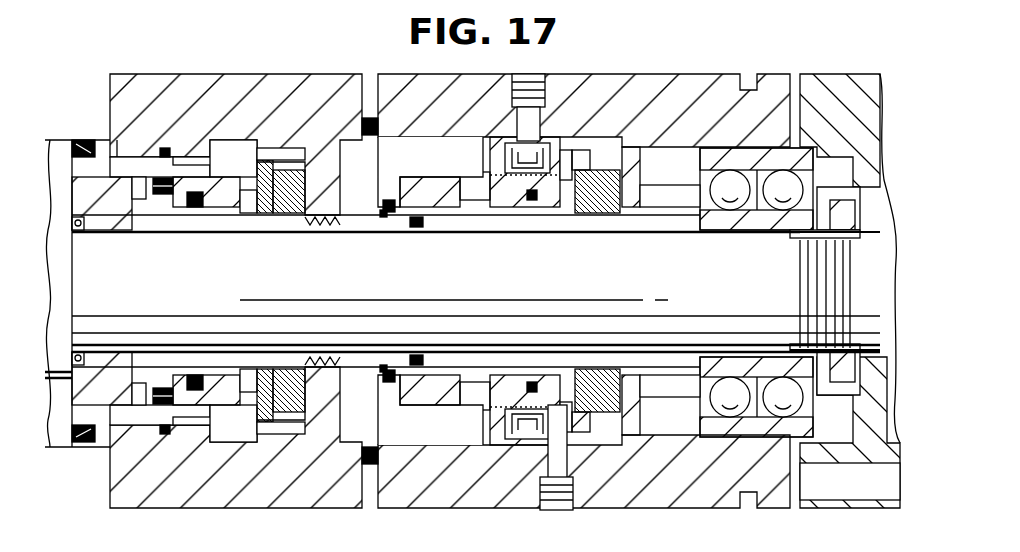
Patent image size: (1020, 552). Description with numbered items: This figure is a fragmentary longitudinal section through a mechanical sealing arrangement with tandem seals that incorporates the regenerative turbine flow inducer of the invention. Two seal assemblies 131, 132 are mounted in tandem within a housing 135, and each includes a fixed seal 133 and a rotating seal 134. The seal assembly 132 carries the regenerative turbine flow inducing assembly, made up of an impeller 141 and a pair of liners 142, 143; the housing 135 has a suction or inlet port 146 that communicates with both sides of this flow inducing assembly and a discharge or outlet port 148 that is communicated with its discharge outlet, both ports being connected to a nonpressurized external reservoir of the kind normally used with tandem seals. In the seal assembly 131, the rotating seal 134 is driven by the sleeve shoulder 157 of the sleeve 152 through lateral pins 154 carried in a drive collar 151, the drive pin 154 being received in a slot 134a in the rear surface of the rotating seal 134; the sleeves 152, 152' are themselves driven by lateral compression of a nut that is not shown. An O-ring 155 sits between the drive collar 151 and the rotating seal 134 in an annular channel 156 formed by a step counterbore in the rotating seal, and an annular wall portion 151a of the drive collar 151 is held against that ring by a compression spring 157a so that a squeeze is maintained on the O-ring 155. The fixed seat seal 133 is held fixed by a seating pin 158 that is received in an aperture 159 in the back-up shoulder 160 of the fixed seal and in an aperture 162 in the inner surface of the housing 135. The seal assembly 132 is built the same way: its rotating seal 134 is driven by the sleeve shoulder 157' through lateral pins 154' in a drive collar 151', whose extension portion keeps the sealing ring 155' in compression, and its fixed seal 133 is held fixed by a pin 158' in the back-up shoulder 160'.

The seal assembly 131 is at (168, 259).
The seal assembly 132 is at (507, 233).
The fixed seal 133 is at (318, 225).
The rotating seal 134 is at (230, 233).
The slot 134a is at (185, 233).
The housing 135 is at (307, 74).
The impeller 141 is at (540, 150).
The liner 142 is at (500, 140).
The liner 143 is at (552, 150).
The inlet port 146 is at (553, 510).
The outlet port 148 is at (528, 95).
The drive collar 151 is at (153, 157).
The drive collar 151' is at (397, 237).
The annular wall portion 151a is at (120, 207).
The sleeve 152 is at (62, 132).
The sleeve 152' is at (367, 200).
The lateral pin 154 is at (203, 141).
The lateral pin 154' is at (441, 179).
The O-ring 155 is at (233, 158).
The sealing ring 155' is at (563, 209).
The annular channel 156 is at (198, 210).
The sleeve shoulder 157 is at (136, 129).
The sleeve shoulder 157' is at (430, 172).
The compression spring 157a is at (118, 147).
The seating pin 158 is at (276, 105).
The pin 158' is at (626, 138).
The aperture 159 is at (258, 215).
The back-up shoulder 160 is at (305, 171).
The back-up shoulder 160' is at (644, 167).
The aperture 162 is at (270, 160).